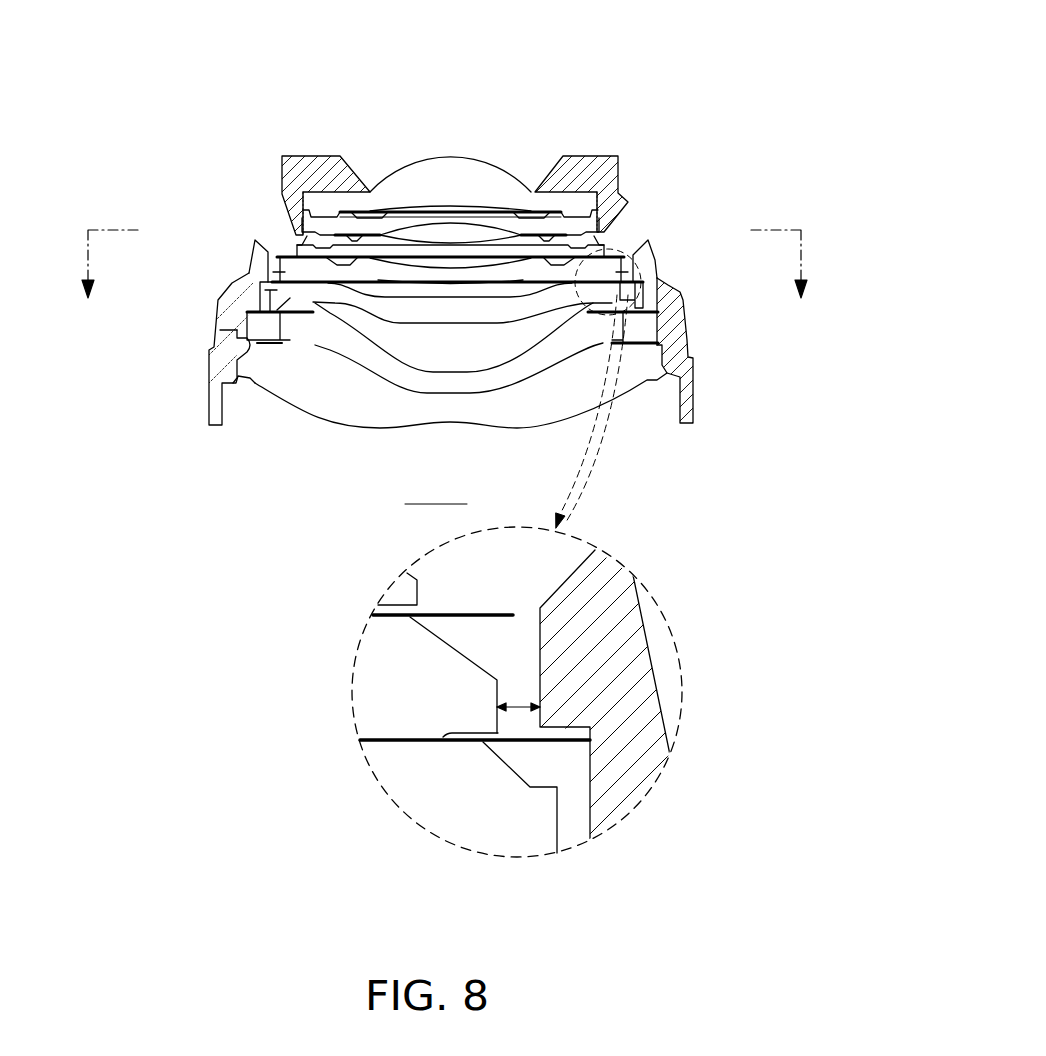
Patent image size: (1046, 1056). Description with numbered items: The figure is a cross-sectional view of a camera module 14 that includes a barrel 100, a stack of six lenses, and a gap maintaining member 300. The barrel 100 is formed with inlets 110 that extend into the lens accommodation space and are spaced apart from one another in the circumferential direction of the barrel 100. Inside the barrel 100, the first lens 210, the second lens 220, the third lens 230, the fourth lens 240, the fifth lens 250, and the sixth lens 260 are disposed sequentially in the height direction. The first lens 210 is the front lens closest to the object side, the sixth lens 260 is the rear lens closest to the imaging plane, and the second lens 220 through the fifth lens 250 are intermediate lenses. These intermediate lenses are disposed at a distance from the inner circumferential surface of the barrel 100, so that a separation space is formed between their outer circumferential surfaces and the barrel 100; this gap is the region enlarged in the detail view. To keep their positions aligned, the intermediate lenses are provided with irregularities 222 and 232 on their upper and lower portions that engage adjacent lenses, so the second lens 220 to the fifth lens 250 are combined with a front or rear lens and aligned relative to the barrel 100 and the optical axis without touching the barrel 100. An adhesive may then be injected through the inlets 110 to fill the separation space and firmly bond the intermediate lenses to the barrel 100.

The camera module 14 is at (641, 104).
The barrel 100 is at (687, 372).
The inlets 110 is at (627, 232).
The first lens 210 is at (497, 166).
The second lens 220 is at (310, 247).
The irregularities 222 is at (633, 262).
The third lens 230 is at (273, 262).
The irregularities 232 is at (622, 303).
The fourth lens 240 is at (290, 298).
The fifth lens 250 is at (262, 350).
The sixth lens 260 is at (262, 368).
The gap maintaining member 300 is at (642, 330).